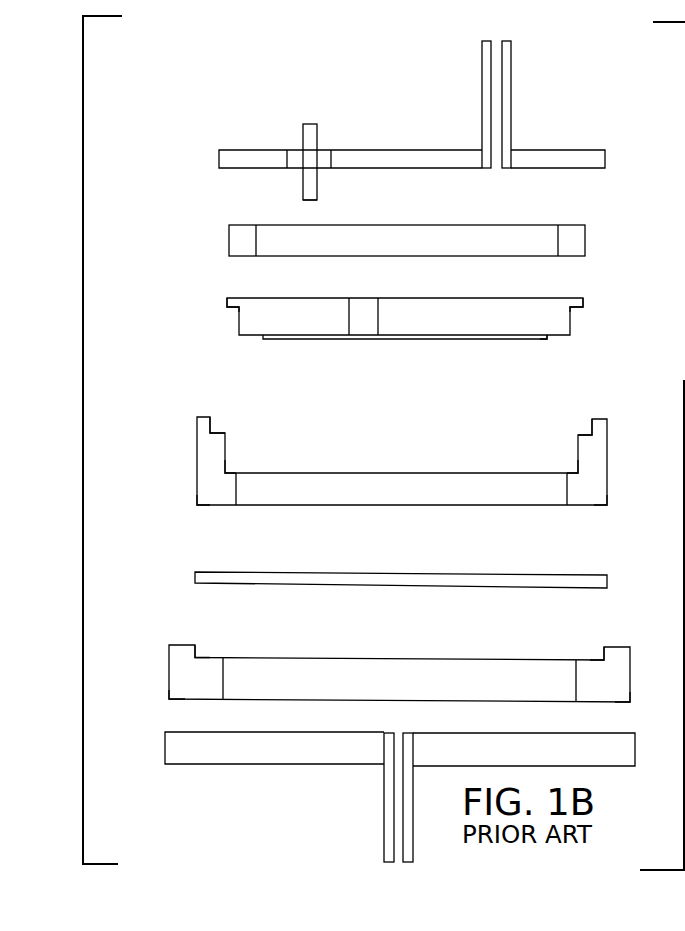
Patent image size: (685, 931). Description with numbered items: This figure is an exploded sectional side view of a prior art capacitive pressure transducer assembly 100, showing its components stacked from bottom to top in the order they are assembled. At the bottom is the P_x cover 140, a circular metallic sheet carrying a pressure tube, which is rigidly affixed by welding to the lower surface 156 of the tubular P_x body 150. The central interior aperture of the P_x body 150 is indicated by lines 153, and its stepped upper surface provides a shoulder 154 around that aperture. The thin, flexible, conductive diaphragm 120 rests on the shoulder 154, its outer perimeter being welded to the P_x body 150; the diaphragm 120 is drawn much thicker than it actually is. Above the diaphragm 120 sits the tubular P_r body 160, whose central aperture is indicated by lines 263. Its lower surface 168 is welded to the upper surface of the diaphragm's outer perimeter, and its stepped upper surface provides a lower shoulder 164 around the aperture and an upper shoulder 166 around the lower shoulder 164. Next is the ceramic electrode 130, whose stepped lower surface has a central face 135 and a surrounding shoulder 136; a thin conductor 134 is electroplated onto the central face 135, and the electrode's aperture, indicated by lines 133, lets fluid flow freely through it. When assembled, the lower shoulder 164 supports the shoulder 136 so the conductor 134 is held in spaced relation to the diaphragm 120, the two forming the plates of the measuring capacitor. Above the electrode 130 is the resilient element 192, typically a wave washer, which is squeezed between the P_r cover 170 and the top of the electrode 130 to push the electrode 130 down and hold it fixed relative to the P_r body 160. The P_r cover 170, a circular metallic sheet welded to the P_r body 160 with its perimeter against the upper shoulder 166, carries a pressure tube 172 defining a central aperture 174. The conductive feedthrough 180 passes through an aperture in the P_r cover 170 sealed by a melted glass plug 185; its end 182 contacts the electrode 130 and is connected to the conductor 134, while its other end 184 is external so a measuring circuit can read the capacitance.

The capacitive pressure transducer assembly 100 is at (178, 787).
The diaphragm 120 is at (442, 572).
The electrode 130 is at (526, 295).
The lines indicating aperture of electrode 133 is at (348, 320).
The conductor 134 is at (433, 340).
The central face 135 is at (550, 339).
The shoulder 136 is at (235, 307).
The P_x cover 140 is at (163, 750).
The P_x body 150 is at (168, 665).
The lines indicating aperture of P_x body 153 is at (225, 678).
The shoulder 154 is at (203, 655).
The lower surface 156 is at (200, 700).
The P_r body 160 is at (395, 472).
The lower shoulder 164 is at (230, 473).
The upper shoulder 166 is at (217, 432).
The lower surface 168 is at (223, 505).
The P_r cover 170 is at (408, 146).
The pressure tube 172 is at (508, 130).
The central aperture 174 is at (495, 167).
The feedthrough 180 is at (300, 143).
The end of feedthrough 182 is at (310, 200).
The other end of feedthrough 184 is at (313, 125).
The melted glass plug 185 is at (320, 148).
The resilient element 192 is at (228, 240).
The lines indicating aperture of P_r body 263 is at (237, 488).